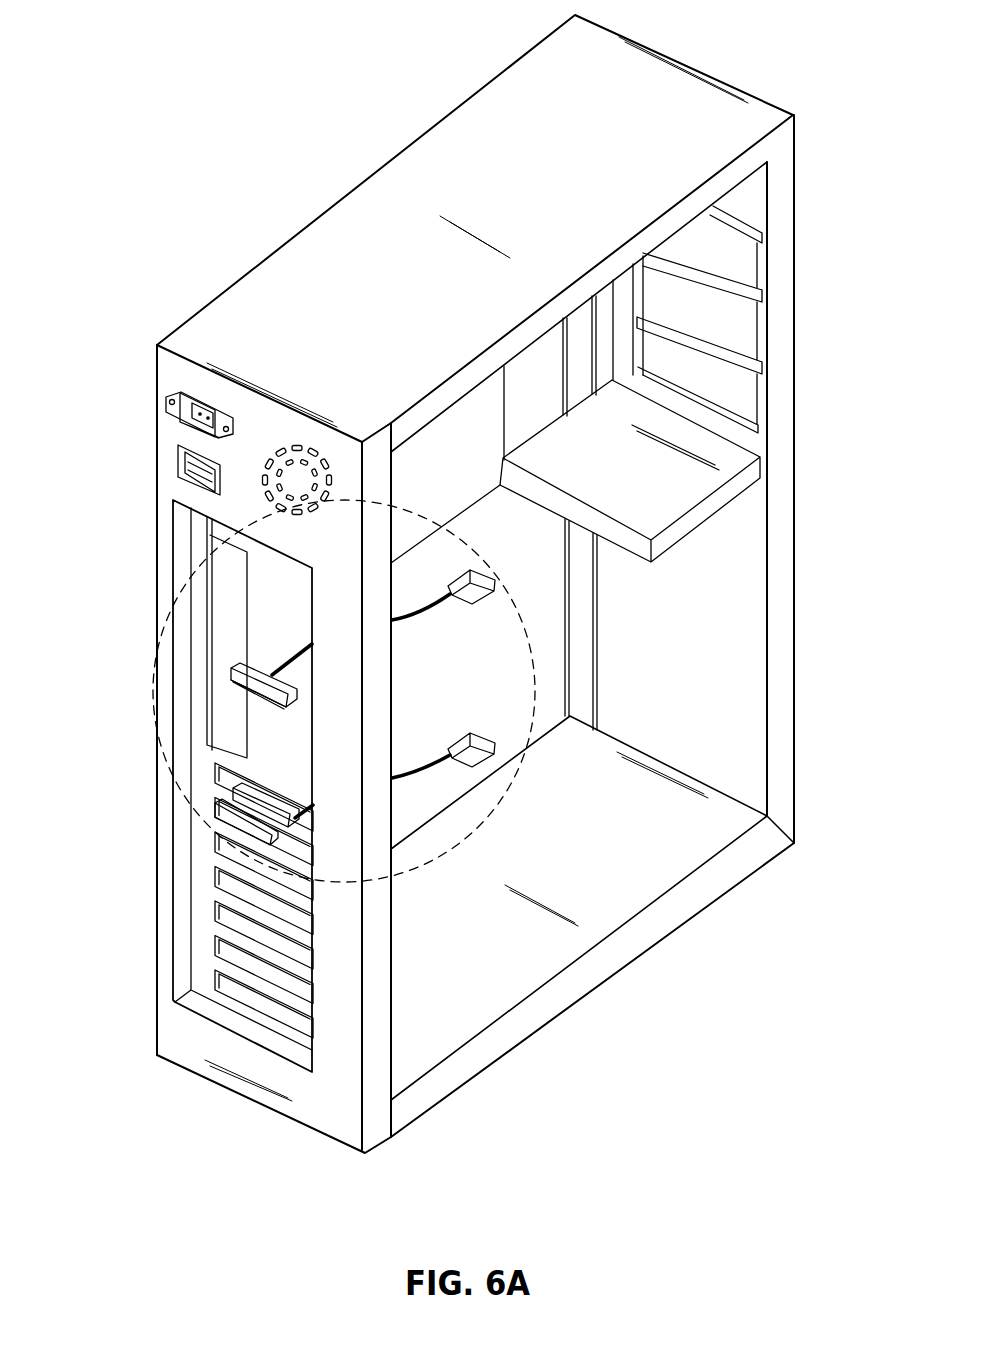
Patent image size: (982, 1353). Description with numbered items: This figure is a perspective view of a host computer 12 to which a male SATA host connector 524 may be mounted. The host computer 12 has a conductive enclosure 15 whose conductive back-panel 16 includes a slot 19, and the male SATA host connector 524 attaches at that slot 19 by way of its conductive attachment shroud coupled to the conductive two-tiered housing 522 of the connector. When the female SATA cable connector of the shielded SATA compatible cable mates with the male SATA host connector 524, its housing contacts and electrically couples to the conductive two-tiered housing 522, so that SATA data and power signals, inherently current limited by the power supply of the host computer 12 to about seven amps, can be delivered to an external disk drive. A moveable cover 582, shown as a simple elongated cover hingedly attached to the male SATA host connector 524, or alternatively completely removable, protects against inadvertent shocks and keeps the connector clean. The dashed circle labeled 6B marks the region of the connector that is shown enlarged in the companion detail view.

The host computer 12 is at (200, 202).
The conductive enclosure 15 is at (166, 440).
The conductive back-panel 16 is at (268, 590).
The slot 19 is at (240, 778).
The male SATA host connector 524 is at (245, 668).
The moveable cover 582 is at (240, 683).
The conductive two-tiered housing 522 is at (300, 832).
The detail view circle 6B is at (150, 695).